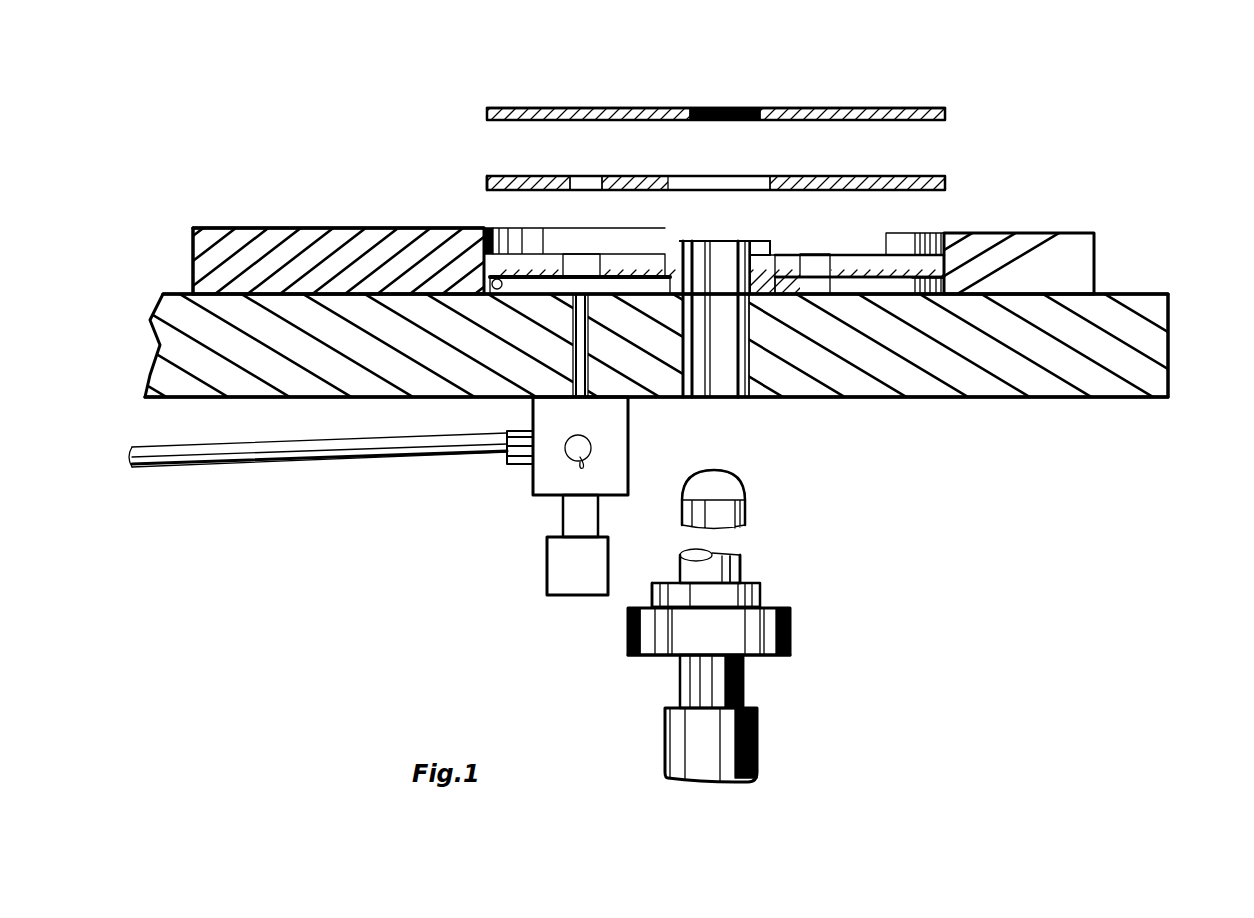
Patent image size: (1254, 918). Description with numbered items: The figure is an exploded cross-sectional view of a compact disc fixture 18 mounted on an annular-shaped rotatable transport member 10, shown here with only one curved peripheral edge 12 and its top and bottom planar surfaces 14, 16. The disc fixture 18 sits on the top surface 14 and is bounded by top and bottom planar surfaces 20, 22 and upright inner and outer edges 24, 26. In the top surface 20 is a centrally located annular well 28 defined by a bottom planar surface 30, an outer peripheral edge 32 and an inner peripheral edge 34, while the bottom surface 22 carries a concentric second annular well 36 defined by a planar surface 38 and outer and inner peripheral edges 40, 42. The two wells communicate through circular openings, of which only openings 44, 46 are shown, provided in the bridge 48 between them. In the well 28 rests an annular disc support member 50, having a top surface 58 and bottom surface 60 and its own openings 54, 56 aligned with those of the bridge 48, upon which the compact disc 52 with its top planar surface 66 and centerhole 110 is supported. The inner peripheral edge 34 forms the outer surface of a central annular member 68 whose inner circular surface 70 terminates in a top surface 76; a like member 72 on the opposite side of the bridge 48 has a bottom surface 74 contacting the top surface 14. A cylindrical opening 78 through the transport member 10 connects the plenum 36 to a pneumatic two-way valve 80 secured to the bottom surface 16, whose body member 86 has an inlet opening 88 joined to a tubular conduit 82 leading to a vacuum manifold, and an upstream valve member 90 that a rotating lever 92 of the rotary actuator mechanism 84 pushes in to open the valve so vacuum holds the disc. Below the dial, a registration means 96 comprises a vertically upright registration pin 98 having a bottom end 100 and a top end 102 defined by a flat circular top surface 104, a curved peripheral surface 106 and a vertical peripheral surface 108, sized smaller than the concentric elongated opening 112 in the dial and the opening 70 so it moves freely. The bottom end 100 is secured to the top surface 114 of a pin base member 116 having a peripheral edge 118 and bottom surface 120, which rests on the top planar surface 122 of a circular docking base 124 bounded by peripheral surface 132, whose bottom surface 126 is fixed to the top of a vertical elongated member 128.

The transport member 10 is at (1140, 398).
The peripheral edge 12 is at (1168, 345).
The top surface 14 is at (1128, 294).
The bottom surface 16 is at (232, 397).
The compact disc fixture 18 is at (368, 228).
The top planar surface 20 is at (296, 228).
The bottom planar surface 22 is at (400, 305).
The inner edge 24 is at (193, 252).
The outer edge 26 is at (1094, 255).
The well 28 is at (950, 225).
The bottom planar surface 30 is at (877, 255).
The outer peripheral edge 32 is at (488, 228).
The inner peripheral edge 34 is at (668, 254).
The second annular-shaped well 36 is at (855, 283).
The planar surface 38 is at (800, 285).
The outer peripheral edge 40 is at (498, 290).
The inner peripheral edge 42 is at (628, 290).
The opening 44 is at (600, 262).
The opening 46 is at (815, 254).
The bridge 48 is at (930, 288).
The disc support member 50 is at (945, 170).
The compact disc 52 is at (930, 90).
The opening 54 is at (597, 176).
The opening 56 is at (850, 176).
The top surface 58 is at (632, 176).
The bottom surface 60 is at (487, 180).
The top planar surface 66 is at (594, 108).
The annular-shaped member 68 is at (685, 235).
The inner surface 70 is at (742, 241).
The annular-shaped member 72 is at (772, 290).
The bottom surface 74 is at (752, 290).
The top surface 76 is at (765, 248).
The opening 78 is at (585, 385).
The two-way valve 80 is at (522, 512).
The tubular conduit 82 is at (325, 470).
The rotary actuator mechanism 84 is at (552, 600).
The body member 86 is at (533, 478).
The inlet opening 88 is at (481, 433).
The valve member 90 is at (590, 466).
The lever 92 is at (563, 515).
The registration means 96 is at (805, 630).
The registration pin 98 is at (745, 565).
The bottom end 100 is at (686, 550).
The top end 102 is at (760, 482).
The top surface 104 is at (712, 470).
The curved peripheral surface 106 is at (690, 488).
The peripheral surface 108 is at (738, 560).
The centerhole 110 is at (745, 108).
The elongated opening 112 is at (722, 397).
The top surface 114 is at (790, 598).
The pin base member 116 is at (795, 605).
The peripheral edge 118 is at (652, 597).
The bottom surface 120 is at (660, 655).
The top planar surface 122 is at (680, 570).
The docking base 124 is at (815, 660).
The bottom surface 126 is at (765, 660).
The elongated member 128 is at (665, 730).
The peripheral surface 132 is at (618, 648).